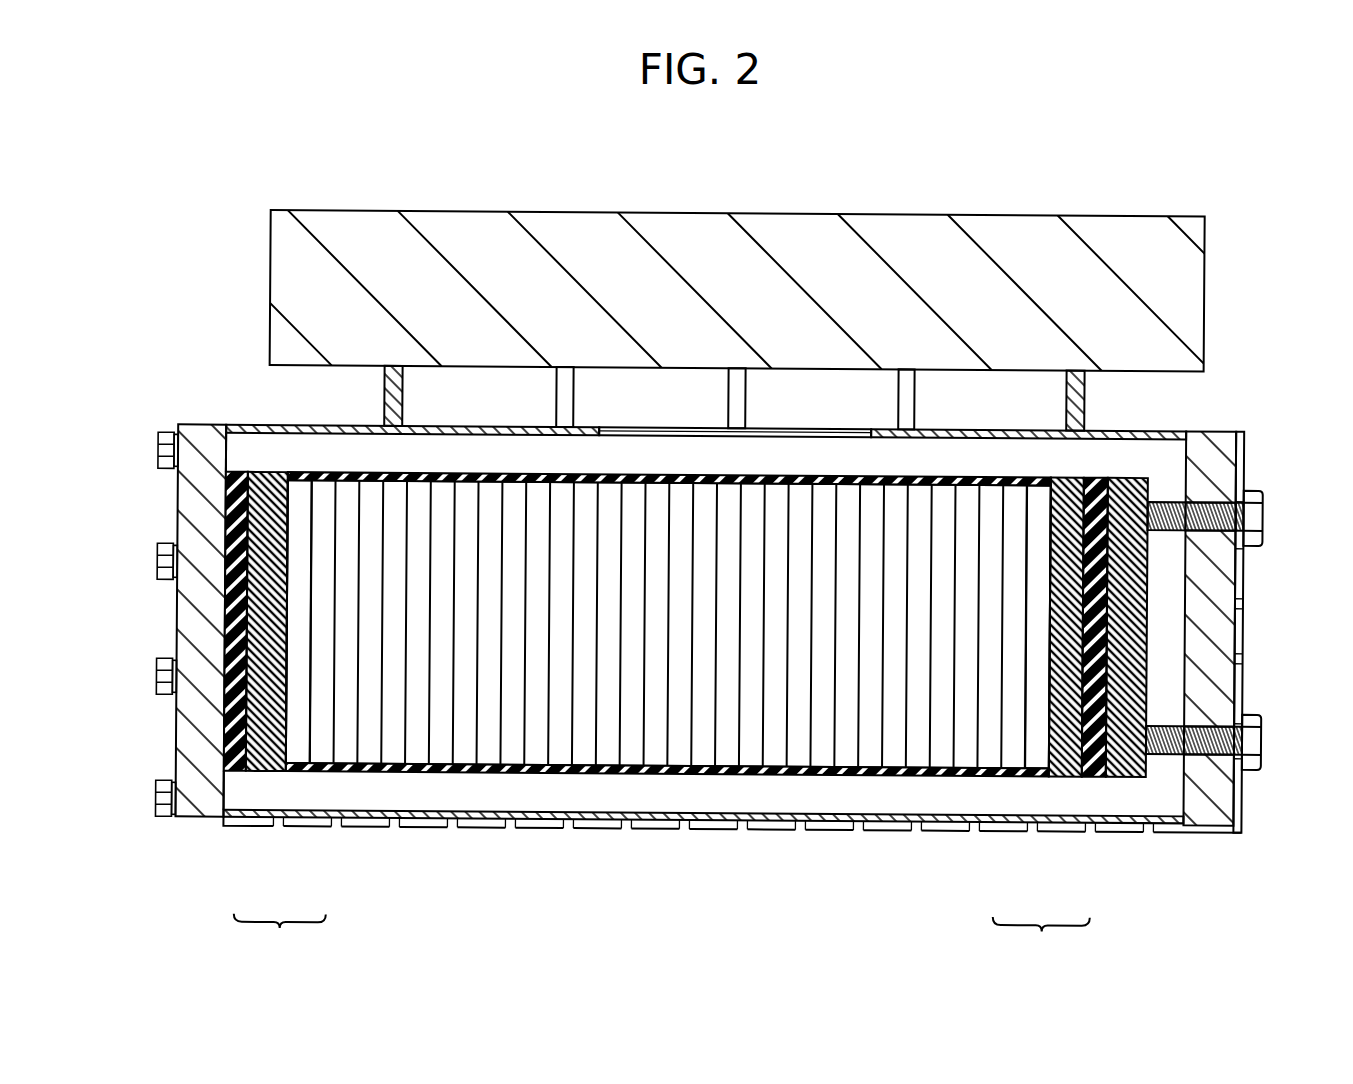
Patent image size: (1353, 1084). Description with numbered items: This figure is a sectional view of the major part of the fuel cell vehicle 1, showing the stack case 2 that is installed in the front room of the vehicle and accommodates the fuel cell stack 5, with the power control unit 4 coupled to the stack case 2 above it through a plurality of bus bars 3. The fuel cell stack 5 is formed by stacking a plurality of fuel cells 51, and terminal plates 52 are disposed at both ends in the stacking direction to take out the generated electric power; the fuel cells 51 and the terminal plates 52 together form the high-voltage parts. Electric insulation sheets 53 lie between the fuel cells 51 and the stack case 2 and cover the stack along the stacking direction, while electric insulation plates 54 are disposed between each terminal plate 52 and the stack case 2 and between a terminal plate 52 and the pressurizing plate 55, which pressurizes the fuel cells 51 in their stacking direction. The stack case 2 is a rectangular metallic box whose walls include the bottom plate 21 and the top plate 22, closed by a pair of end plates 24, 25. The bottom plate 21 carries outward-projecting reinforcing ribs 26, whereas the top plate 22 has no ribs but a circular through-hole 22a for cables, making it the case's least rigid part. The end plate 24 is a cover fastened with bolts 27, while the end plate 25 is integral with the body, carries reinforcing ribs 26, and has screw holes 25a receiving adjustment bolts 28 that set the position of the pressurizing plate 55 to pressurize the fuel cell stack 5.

The fuel cell vehicle 1 is at (1243, 200).
The stack case 2 is at (580, 834).
The bus bars 3 is at (1072, 392).
The power control unit 4 is at (897, 233).
The fuel cell stack 5 is at (715, 777).
The bottom plate 21 is at (766, 829).
The top plate 22 is at (965, 428).
The circular through-hole 22a is at (603, 432).
The end plate 24 is at (198, 811).
The end plate 25 is at (1210, 807).
The screw holes 25a is at (1207, 514).
The reinforcing ribs 26 is at (1240, 651).
The bolts 27 is at (157, 456).
The adjustment bolts 28 is at (1265, 510).
The fuel cells 51 is at (320, 756).
The terminal plates 52 is at (266, 778).
The electric insulation sheets 53 is at (330, 479).
The electric insulation plates 54 is at (241, 474).
The pressurizing plate 55 is at (1133, 777).